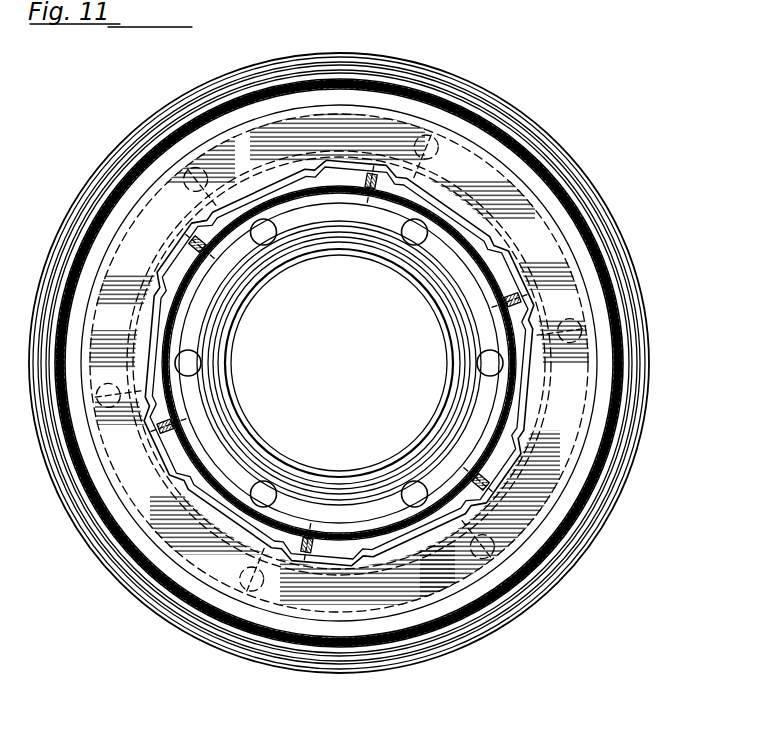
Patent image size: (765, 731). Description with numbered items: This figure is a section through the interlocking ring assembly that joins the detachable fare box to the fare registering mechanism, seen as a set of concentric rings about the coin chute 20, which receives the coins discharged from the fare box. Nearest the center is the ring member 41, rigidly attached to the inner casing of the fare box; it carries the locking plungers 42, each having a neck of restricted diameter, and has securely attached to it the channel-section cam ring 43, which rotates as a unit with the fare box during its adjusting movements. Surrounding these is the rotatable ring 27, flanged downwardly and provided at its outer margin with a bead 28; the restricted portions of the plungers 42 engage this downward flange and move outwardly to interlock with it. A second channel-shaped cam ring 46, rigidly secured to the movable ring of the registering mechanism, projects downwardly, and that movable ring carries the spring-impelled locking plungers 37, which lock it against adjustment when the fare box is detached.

The chute 20 is at (552, 0).
The locking plungers 37 is at (505, 128).
The bead 28 is at (581, 194).
The rotatable ring 27 is at (542, 180).
The cam ring 46 is at (562, 293).
The locking plungers 42 is at (373, 192).
The cam ring 43 is at (318, 548).
The ring member 41 is at (246, 440).